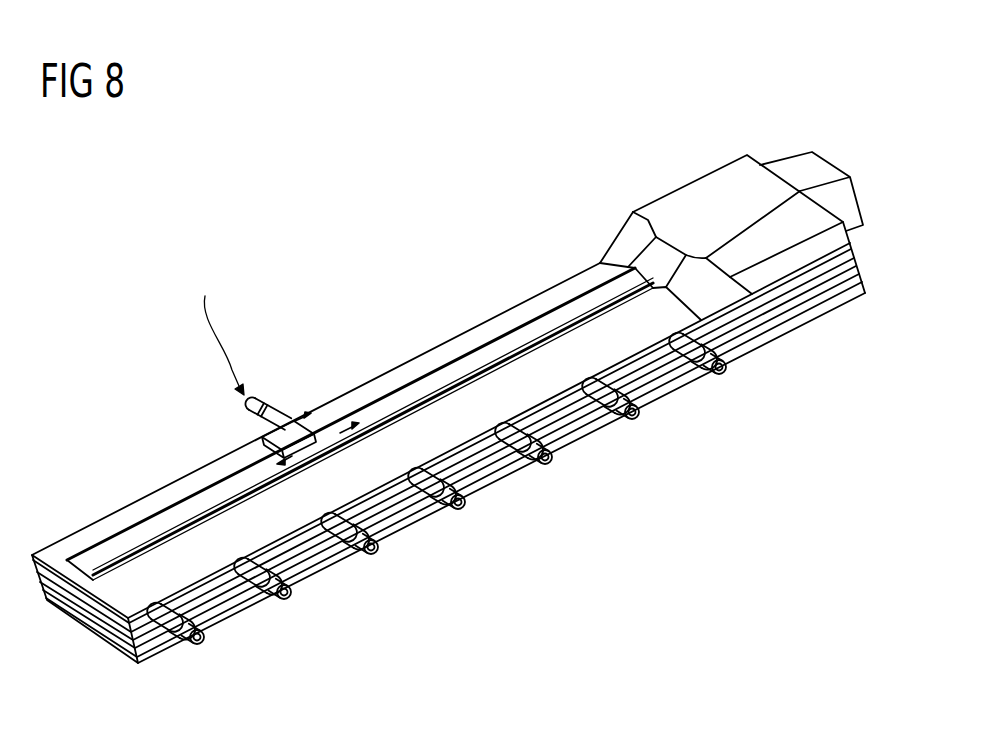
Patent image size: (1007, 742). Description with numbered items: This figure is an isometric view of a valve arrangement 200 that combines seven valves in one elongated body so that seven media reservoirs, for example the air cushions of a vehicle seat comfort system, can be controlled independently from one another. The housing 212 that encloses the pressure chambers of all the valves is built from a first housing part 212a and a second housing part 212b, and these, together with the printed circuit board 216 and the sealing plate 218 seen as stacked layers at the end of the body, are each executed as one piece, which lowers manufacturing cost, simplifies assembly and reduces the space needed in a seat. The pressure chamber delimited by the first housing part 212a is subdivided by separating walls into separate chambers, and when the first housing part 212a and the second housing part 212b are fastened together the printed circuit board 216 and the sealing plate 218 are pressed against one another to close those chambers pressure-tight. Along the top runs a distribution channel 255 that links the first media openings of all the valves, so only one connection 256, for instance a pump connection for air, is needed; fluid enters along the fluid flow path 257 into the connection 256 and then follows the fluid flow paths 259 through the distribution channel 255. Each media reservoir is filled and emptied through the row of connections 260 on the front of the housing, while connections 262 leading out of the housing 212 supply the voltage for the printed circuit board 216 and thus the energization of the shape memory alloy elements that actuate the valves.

The valve arrangement 200 is at (304, 186).
The housing 212 is at (597, 232).
The first housing part 212a is at (118, 522).
The second housing part 212b is at (127, 662).
The printed circuit board 216 is at (147, 648).
The sealing plate 218 is at (157, 643).
The distribution channel 255 is at (432, 385).
The connection 256 is at (279, 400).
The fluid flow path 257 is at (219, 328).
The fluid flow paths 259 is at (333, 425).
The connections 260 is at (553, 386).
The connections 262 is at (822, 162).